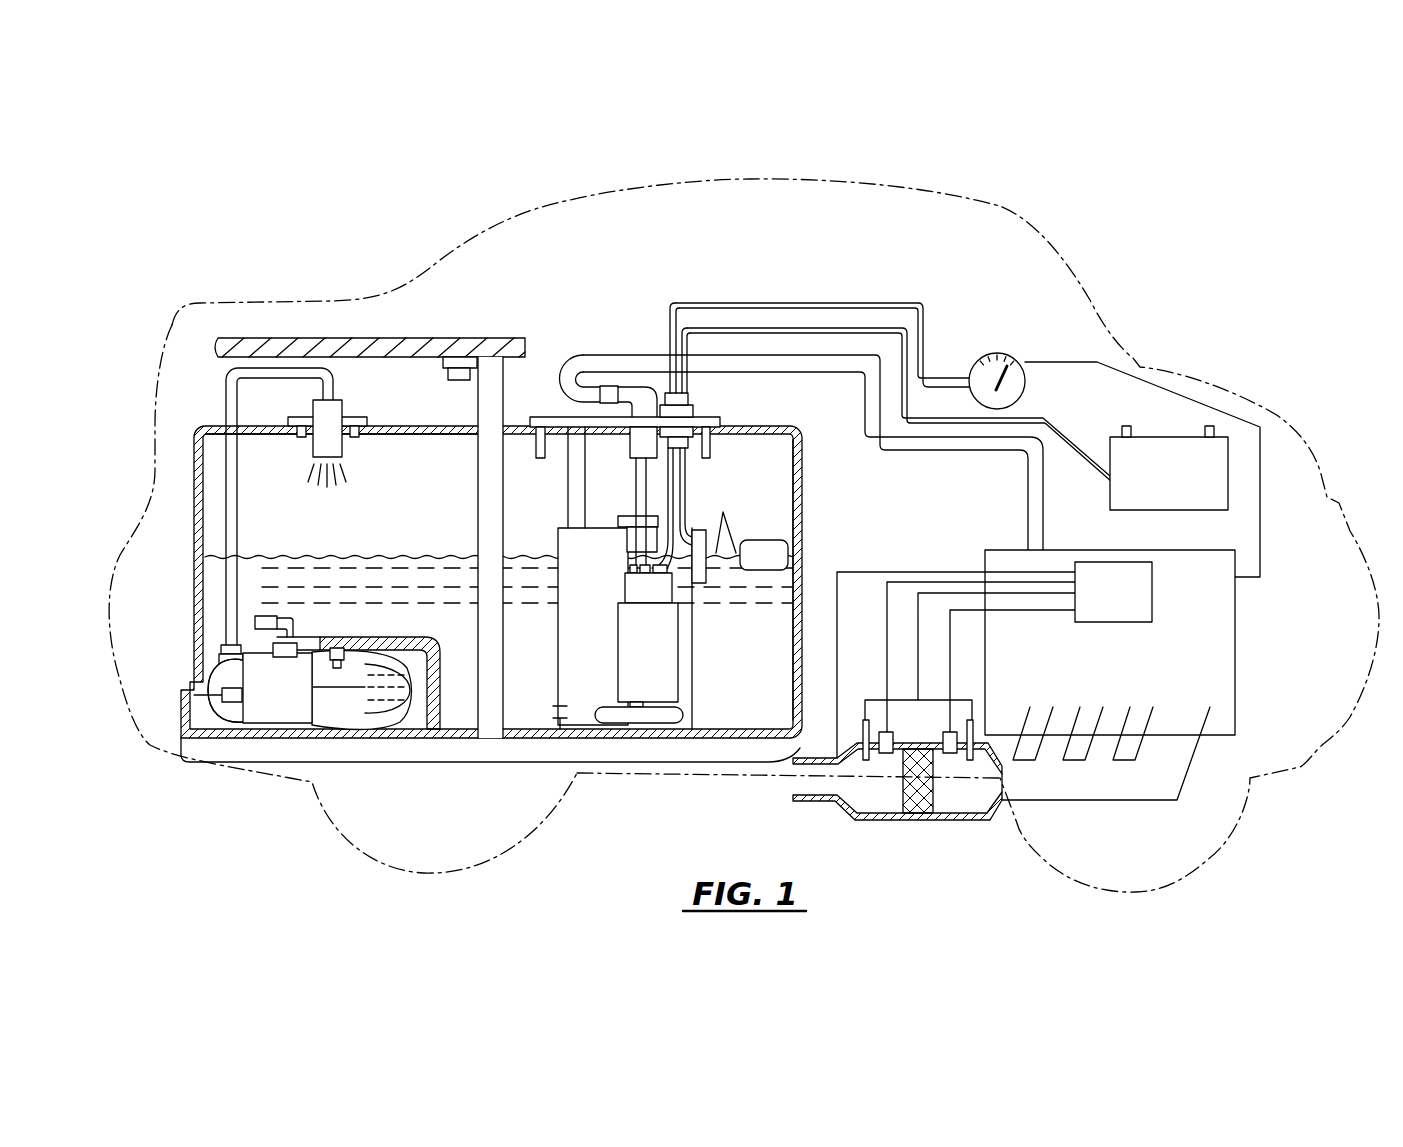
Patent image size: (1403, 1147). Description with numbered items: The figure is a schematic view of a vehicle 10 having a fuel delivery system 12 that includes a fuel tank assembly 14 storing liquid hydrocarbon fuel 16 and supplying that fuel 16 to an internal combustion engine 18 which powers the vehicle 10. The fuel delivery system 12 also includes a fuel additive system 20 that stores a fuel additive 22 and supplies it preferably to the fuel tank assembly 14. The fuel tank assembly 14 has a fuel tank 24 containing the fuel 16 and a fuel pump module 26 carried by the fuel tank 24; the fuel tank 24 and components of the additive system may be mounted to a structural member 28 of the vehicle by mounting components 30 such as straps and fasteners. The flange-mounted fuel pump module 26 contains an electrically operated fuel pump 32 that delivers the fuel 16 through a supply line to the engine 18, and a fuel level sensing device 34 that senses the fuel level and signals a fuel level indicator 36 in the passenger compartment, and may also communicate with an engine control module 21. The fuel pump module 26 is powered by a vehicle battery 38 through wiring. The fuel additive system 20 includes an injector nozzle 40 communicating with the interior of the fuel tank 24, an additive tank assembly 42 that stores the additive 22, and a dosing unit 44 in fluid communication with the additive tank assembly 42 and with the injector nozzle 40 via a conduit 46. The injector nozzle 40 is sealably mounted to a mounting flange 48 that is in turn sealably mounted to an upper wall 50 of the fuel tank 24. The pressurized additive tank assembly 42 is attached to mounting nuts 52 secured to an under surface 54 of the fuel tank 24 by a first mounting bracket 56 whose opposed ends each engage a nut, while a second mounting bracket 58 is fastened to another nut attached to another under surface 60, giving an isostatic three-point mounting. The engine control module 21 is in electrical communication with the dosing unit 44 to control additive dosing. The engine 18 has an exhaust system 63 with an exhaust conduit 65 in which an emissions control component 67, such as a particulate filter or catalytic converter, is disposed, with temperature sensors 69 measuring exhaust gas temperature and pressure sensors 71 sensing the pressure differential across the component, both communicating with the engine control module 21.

The vehicle 10 is at (1174, 247).
The fuel delivery system 12 is at (488, 766).
The fuel tank assembly 14 is at (752, 418).
The fuel 16 is at (725, 628).
The internal combustion engine 18 is at (1110, 675).
The fuel additive system 20 is at (277, 665).
The engine control module 21 is at (1152, 593).
The fuel additive 22 is at (398, 712).
The fuel tank 24 is at (798, 530).
The fuel pump module 26 is at (551, 529).
The structural member 28 is at (363, 338).
The mounting components 30 is at (490, 378).
The fuel pump 32 is at (643, 585).
The fuel level sensing device 34 is at (746, 509).
The fuel level indicator 36 is at (1000, 355).
The vehicle battery 38 is at (1222, 458).
The injector nozzle 40 is at (330, 413).
The additive tank assembly 42 is at (313, 737).
The dosing unit 44 is at (259, 733).
The conduit 46 is at (226, 397).
The mounting flange 48 is at (367, 418).
The upper wall 50 is at (437, 437).
The mounting nuts 52 is at (353, 640).
The under surface 54 is at (212, 623).
The first mounting bracket 56 is at (263, 627).
The second mounting bracket 58 is at (327, 705).
The under surface 60 is at (410, 712).
The exhaust system 63 is at (977, 843).
The exhaust conduit 65 is at (998, 813).
The emissions control component 67 is at (913, 817).
The temperature sensors 69 is at (880, 753).
The pressure sensors 71 is at (866, 785).